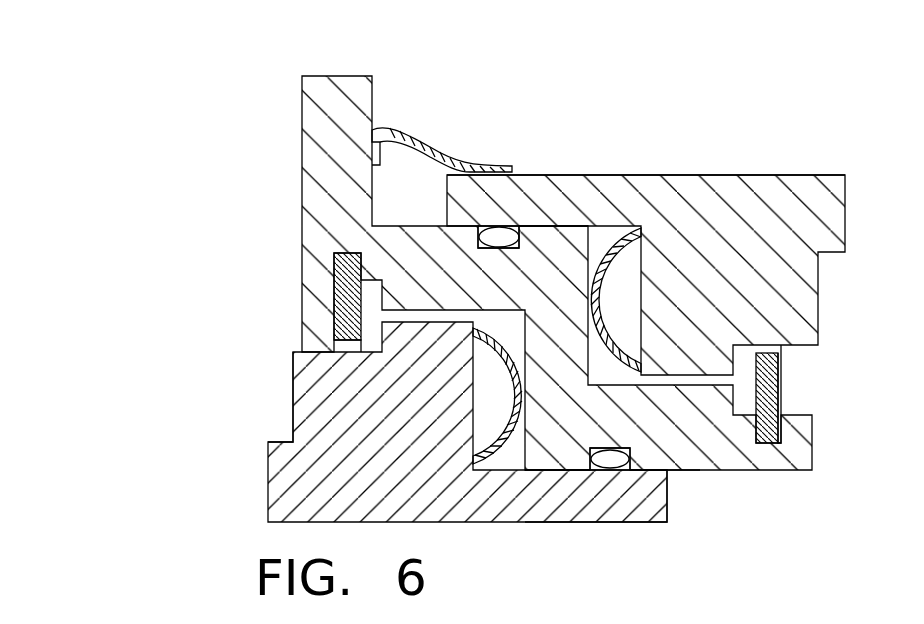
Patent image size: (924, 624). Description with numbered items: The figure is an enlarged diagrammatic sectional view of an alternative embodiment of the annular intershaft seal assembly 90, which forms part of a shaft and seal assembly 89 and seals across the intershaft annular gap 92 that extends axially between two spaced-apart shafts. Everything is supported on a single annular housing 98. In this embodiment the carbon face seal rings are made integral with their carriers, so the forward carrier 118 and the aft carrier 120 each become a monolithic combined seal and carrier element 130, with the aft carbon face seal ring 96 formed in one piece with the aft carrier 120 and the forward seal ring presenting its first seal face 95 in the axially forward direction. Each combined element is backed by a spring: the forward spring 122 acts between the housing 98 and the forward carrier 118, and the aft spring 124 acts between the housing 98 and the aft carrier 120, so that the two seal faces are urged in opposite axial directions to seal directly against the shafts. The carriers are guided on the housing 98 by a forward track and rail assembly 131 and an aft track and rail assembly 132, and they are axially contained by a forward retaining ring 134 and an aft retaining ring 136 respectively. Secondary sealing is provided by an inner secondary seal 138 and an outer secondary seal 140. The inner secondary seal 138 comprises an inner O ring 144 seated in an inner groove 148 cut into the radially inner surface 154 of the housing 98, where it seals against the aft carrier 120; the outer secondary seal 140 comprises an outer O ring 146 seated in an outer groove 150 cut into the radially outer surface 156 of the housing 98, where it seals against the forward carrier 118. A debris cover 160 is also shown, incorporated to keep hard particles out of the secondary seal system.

The intershaft seal assembly 90 is at (586, 80).
The shaft and seal assembly 89 is at (670, 105).
The aft carbon face seal ring 96 is at (790, 175).
The aft carrier 120 is at (655, 175).
The aft spring 124 is at (620, 236).
The radially outer surface 156 is at (578, 226).
The outer O ring 146 is at (510, 226).
The outer groove 150 is at (492, 242).
The debris cover 160 is at (405, 135).
The outer secondary seal 140 is at (490, 236).
The forward track and rail assembly 131 is at (348, 296).
The forward retaining ring 134 is at (340, 332).
The monolithic combined seal and carrier element 130 is at (293, 396).
The first seal face 95 is at (268, 475).
The annular housing 98 is at (772, 495).
The forward spring 122 is at (493, 452).
The radially inner surface 154 is at (537, 470).
The forward carrier 118 is at (558, 522).
The inner secondary seal 138 is at (606, 466).
The inner O ring 144 is at (610, 470).
The inner groove 148 is at (640, 470).
The aft track and rail assembly 132 is at (775, 372).
The aft retaining ring 136 is at (780, 425).
The intershaft annular gap 92 is at (770, 556).